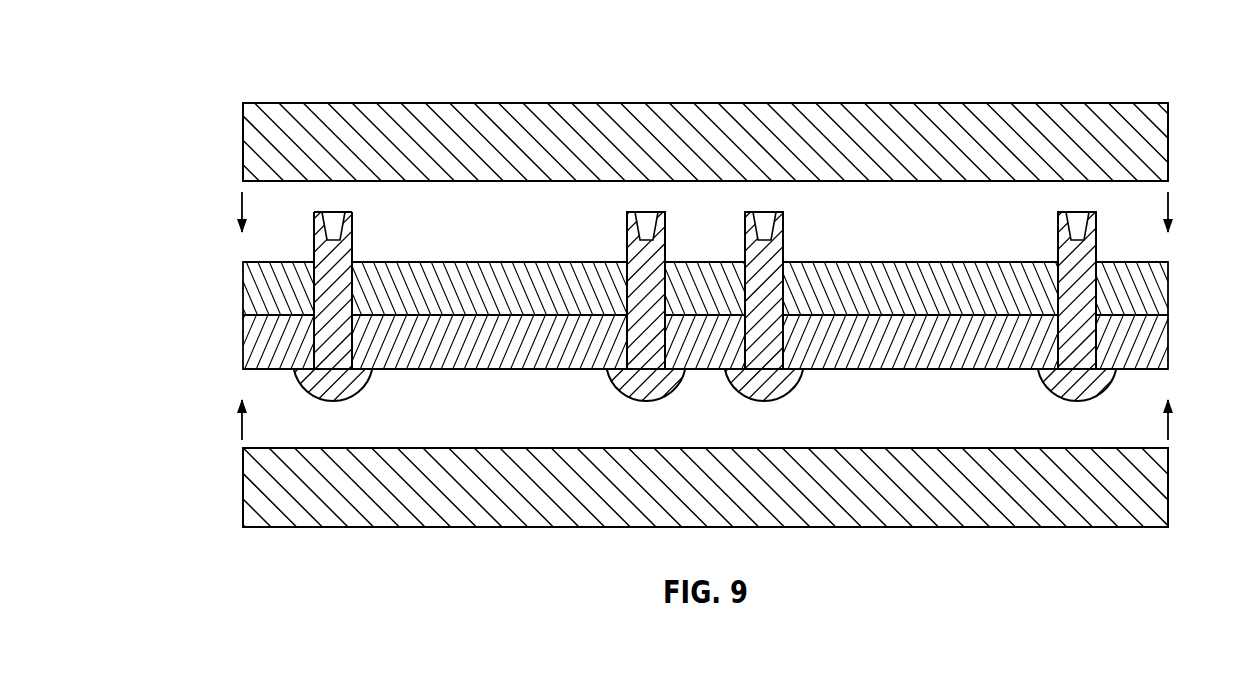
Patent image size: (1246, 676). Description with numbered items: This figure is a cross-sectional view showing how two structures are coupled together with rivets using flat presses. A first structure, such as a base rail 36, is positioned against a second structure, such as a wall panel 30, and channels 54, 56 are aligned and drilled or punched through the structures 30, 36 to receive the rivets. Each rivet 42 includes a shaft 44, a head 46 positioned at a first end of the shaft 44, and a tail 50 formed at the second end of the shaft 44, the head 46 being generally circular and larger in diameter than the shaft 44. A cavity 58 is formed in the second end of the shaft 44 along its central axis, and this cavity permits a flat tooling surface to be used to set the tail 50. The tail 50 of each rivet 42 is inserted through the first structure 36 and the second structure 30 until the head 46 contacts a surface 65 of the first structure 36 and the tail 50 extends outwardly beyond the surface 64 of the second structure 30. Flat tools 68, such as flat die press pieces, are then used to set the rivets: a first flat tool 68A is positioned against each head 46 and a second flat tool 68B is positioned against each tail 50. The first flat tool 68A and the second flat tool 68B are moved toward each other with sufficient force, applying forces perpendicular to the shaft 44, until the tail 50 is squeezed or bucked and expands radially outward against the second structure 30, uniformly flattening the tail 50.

The wall panel 30 is at (741, 270).
The base rail 36 is at (741, 354).
The rivet 42 is at (638, 302).
The shaft 44 is at (313, 322).
The head 46 is at (292, 375).
The tail 50 is at (311, 210).
The channel 54 is at (354, 282).
The channel 56 is at (354, 338).
The cavity 58 is at (313, 227).
The surface of the second structure 64 is at (467, 262).
The surface of the first structure 65 is at (467, 370).
The flat tools 68 is at (653, 272).
The first flat tool 68A is at (250, 487).
The second flat tool 68B is at (250, 129).